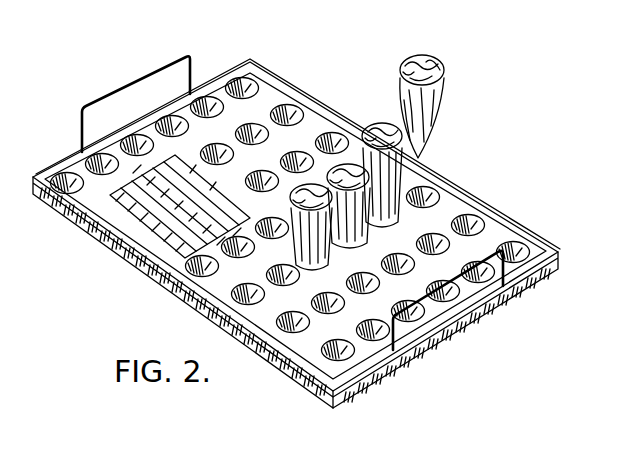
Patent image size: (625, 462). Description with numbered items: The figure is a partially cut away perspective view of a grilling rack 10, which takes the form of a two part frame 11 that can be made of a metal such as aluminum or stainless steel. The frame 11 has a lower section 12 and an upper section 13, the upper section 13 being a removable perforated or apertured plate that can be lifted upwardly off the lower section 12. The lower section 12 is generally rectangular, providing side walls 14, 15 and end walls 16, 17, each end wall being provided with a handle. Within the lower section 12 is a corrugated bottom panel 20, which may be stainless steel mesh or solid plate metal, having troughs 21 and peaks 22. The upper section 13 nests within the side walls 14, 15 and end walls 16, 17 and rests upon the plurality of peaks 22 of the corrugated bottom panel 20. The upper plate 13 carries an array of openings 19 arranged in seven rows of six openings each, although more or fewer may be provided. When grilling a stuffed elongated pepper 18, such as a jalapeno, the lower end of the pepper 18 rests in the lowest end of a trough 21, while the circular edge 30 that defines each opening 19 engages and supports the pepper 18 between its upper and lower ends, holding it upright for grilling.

The grilling rack 10 is at (494, 118).
The frame 11 is at (460, 208).
The lower section 12 is at (178, 321).
The upper section 13 is at (272, 89).
The side wall 14 is at (103, 268).
The side wall 15 is at (327, 112).
The end wall 16 is at (410, 362).
The end wall 17 is at (62, 160).
The pepper 18 is at (440, 123).
The opening 19 is at (234, 84).
The corrugated bottom panel 20 is at (137, 278).
The trough 21 is at (149, 300).
The peak 22 is at (96, 223).
The circular edge 30 is at (436, 186).